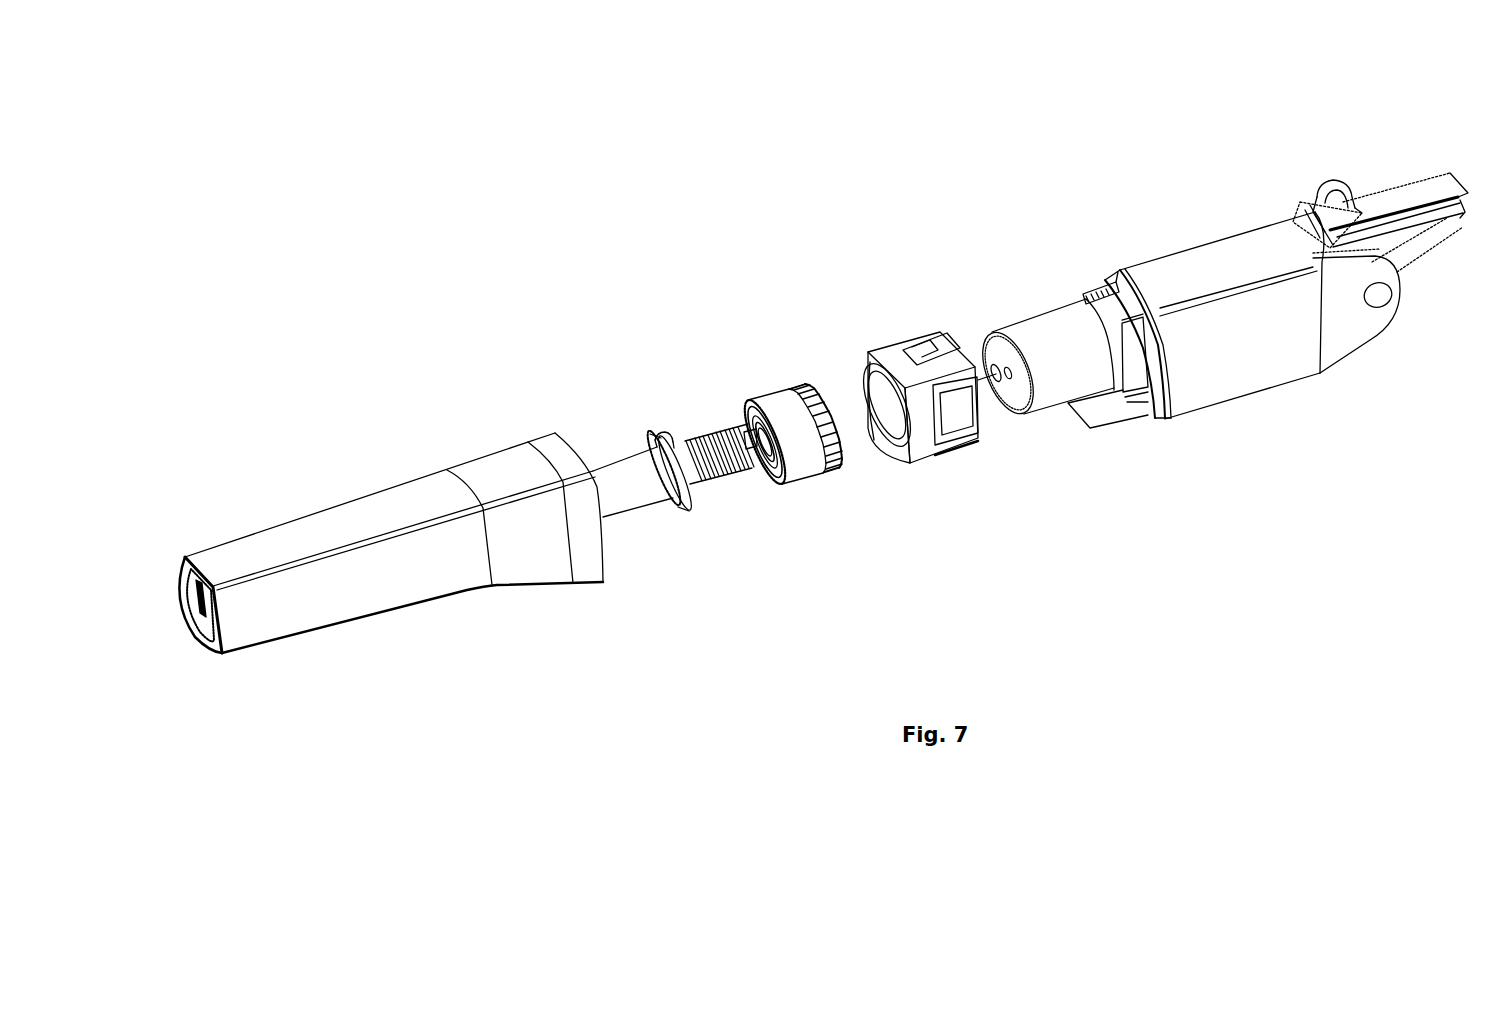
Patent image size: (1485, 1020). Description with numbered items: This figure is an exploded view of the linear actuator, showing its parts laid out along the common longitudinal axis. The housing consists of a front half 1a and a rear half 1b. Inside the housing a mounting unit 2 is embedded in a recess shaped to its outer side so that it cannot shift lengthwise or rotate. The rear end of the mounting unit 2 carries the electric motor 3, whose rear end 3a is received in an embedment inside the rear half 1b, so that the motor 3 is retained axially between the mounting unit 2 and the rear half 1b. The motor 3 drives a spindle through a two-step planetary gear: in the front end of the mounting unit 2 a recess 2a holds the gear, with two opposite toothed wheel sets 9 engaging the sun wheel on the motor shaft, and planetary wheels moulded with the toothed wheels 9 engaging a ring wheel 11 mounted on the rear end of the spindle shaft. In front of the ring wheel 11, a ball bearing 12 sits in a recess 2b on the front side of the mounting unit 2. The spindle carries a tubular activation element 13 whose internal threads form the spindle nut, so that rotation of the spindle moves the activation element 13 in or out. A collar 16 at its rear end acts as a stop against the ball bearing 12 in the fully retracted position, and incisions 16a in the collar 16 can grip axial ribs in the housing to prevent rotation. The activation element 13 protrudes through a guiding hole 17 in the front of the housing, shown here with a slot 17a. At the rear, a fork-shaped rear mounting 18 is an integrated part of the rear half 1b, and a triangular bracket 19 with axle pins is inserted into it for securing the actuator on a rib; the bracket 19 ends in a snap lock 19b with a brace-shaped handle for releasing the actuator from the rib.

The front half 1a is at (388, 595).
The rear half 1b is at (1233, 392).
The mounting unit 2 is at (930, 427).
The recess 2a is at (897, 410).
The recess 2b is at (875, 432).
The electric motor 3 is at (1035, 323).
The rear end 3a is at (1017, 413).
The toothed wheel 9 is at (820, 387).
The ring wheel 11 is at (800, 397).
The ball bearing 12 is at (770, 402).
The activation element 13 is at (620, 468).
The collar 16 is at (657, 438).
The incisions 16a is at (668, 437).
The hole 17 is at (195, 628).
The slot 17a is at (180, 582).
The rear mounting 18 is at (1333, 323).
The bracket 19 is at (1400, 188).
The snap lock 19b is at (1332, 188).